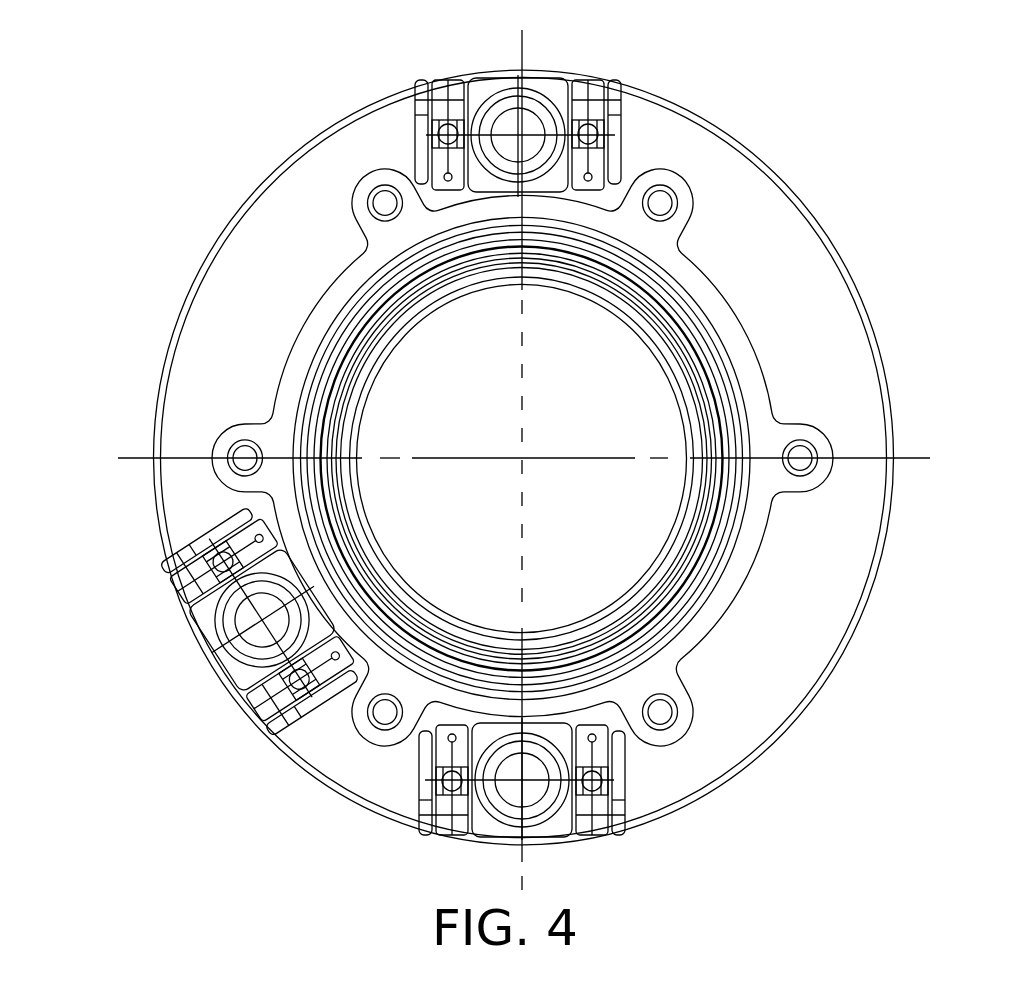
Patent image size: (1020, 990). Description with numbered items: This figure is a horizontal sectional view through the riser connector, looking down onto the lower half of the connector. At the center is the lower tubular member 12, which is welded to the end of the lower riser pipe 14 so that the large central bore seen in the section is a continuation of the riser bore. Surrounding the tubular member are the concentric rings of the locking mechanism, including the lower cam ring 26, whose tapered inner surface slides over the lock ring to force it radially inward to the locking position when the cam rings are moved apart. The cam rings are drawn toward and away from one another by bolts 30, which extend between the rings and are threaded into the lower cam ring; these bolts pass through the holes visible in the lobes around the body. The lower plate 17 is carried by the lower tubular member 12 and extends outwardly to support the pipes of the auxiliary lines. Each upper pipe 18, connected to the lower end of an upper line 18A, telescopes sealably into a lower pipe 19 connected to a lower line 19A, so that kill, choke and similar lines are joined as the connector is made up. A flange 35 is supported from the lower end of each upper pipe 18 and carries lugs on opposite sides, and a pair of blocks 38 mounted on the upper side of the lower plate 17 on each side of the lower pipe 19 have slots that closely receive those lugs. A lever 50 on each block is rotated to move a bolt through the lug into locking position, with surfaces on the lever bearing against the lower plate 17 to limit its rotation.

The lower tubular member 12 is at (698, 353).
The lower riser pipe 14 is at (670, 343).
The lower plate 17 is at (750, 248).
The upper pipe 18 is at (195, 663).
The upper line 18A is at (237, 642).
The lower pipe 19 is at (478, 98).
The lower line 19A is at (487, 107).
The lower cam ring 26 is at (735, 323).
The bolts 30 is at (661, 203).
The flange 35 is at (586, 803).
The blocks 38 is at (597, 808).
The lever 50 is at (622, 757).